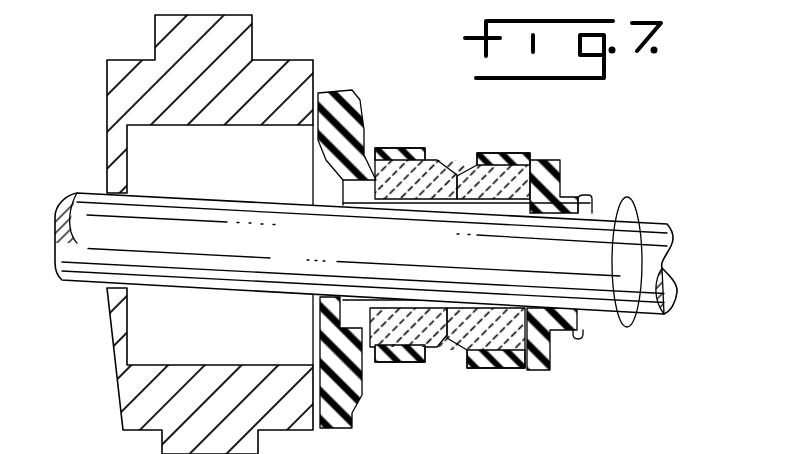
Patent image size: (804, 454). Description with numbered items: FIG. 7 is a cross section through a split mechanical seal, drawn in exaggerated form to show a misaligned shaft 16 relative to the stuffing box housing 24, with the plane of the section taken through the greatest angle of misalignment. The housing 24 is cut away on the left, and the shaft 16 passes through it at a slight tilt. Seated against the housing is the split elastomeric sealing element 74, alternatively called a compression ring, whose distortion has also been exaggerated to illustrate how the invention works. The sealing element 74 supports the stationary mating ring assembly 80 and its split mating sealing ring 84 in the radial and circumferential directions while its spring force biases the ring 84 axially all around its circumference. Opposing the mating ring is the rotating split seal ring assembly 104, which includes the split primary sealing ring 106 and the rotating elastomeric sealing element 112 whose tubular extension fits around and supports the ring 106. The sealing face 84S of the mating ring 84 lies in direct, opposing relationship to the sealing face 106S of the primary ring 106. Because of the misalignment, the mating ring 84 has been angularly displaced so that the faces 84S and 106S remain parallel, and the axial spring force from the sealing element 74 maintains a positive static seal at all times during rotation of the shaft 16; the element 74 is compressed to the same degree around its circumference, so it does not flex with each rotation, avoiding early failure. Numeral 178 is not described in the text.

The shaft 16 is at (612, 237).
The stuffing box housing 24 is at (130, 393).
The split elastomeric sealing element 74 is at (348, 103).
The stationary mating ring assembly 80 is at (388, 372).
The split mating sealing ring 84 is at (431, 150).
The sealing face 84S is at (468, 208).
The rotating split seal ring assembly 104 is at (523, 139).
The split primary sealing ring 106 is at (513, 368).
The sealing face 106S is at (438, 337).
The rotating elastomeric sealing element 112 is at (553, 158).
The bearing 178 is at (454, 446).